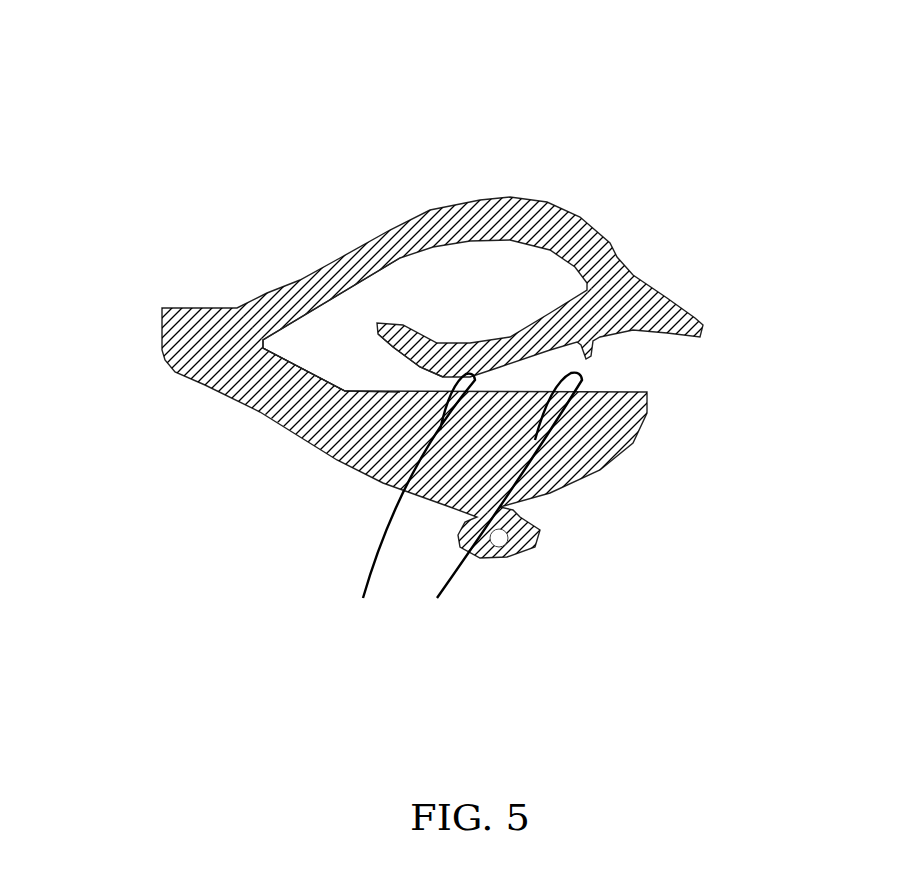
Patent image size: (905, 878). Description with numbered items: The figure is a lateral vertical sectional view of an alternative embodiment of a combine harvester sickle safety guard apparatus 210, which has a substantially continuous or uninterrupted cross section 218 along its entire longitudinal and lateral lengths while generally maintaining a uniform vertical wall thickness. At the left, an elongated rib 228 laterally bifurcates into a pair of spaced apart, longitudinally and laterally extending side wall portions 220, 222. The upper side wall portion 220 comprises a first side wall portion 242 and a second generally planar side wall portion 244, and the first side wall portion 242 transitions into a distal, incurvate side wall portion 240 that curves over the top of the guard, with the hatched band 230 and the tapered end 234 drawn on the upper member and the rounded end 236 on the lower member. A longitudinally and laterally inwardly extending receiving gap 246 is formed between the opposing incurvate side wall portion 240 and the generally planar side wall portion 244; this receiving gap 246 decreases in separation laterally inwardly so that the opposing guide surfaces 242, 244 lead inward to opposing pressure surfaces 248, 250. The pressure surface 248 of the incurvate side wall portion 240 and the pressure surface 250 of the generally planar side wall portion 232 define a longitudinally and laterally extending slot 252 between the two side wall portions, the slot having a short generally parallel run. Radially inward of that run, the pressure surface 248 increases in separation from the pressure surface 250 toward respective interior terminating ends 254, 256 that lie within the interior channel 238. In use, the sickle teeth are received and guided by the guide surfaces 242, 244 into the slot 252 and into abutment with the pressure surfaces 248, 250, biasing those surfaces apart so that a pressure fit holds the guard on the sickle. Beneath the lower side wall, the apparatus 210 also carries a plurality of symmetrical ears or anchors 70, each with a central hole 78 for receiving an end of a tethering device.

The combine harvester sickle safety guard apparatus 210 is at (627, 107).
The cross section 218 is at (247, 272).
The side wall portion 220 is at (297, 278).
The side wall portion 222 is at (270, 416).
The elongated rib 228 is at (161, 346).
The arcuate band 230 is at (350, 268).
The generally planar side wall portion 232 is at (363, 420).
The tail end 234 is at (704, 322).
The end portion 236 is at (648, 398).
The interior channel 238 is at (300, 355).
The incurvate side wall portion 240 is at (510, 343).
The first side wall portion 242 is at (586, 352).
The generally planar side wall portion 244 is at (498, 506).
The receiving gap 246 is at (665, 367).
The pressure surface 248 is at (443, 377).
The pressure surface 250 is at (397, 501).
The slot 252 is at (403, 373).
The interior terminating end 254 is at (380, 325).
The interior terminating end 256 is at (343, 390).
The symmetrical ear or anchor 70 is at (520, 547).
The central hole 78 is at (500, 540).